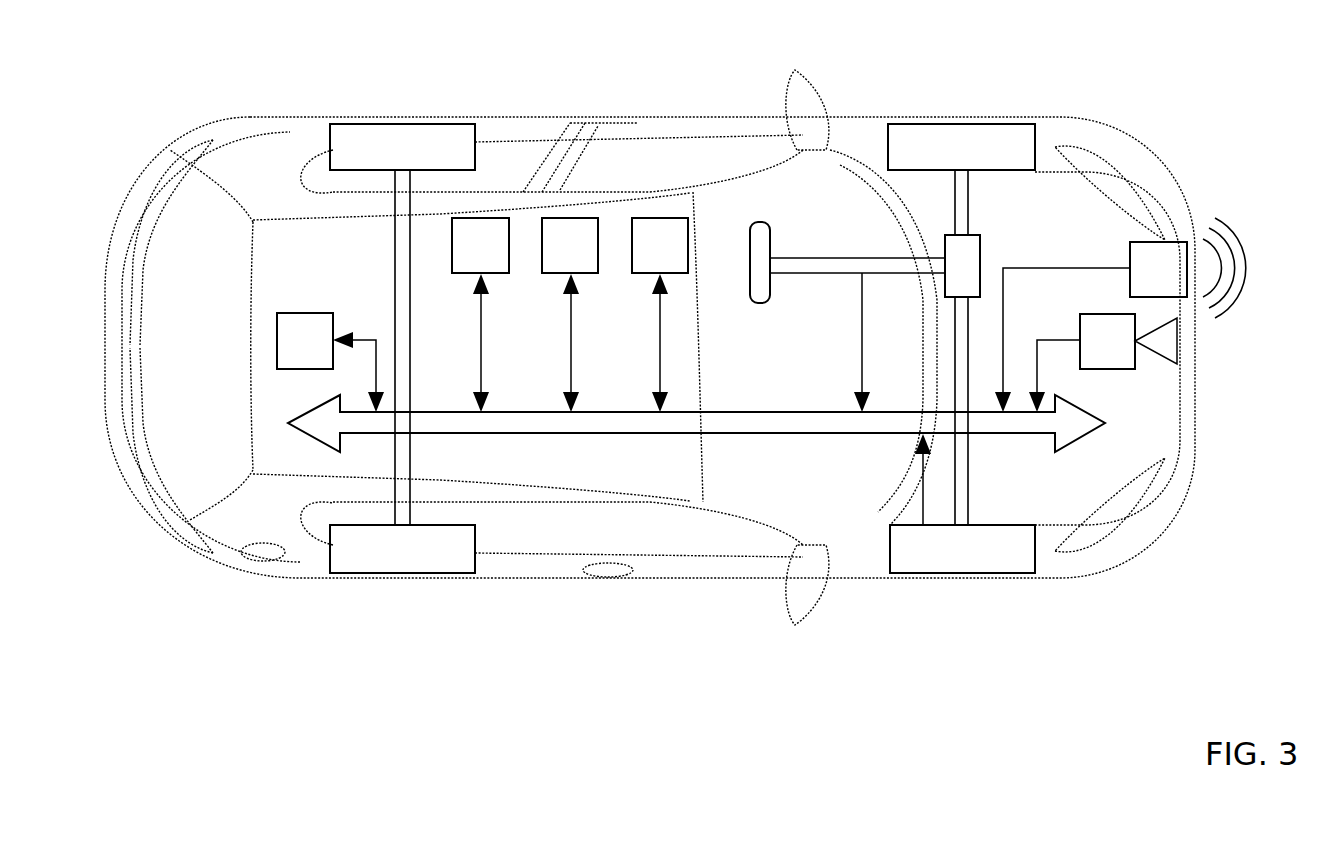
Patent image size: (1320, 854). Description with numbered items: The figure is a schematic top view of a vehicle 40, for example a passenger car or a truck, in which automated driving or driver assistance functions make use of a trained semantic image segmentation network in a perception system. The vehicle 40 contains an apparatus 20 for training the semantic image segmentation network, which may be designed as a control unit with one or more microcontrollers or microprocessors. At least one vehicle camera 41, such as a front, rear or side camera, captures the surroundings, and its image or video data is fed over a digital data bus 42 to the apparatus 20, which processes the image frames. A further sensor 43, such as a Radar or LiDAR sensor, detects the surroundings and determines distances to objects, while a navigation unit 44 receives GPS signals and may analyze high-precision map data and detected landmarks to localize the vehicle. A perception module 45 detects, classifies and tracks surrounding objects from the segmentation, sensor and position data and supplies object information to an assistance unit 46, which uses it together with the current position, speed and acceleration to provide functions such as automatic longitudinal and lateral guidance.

The apparatus 20 is at (481, 217).
The vehicle 40 is at (1175, 88).
The vehicle camera 41 is at (1107, 368).
The digital data bus 42 is at (771, 432).
The further sensor 43 is at (1162, 241).
The navigation unit 44 is at (570, 217).
The perception module 45 is at (305, 312).
The assistance unit 46 is at (658, 217).